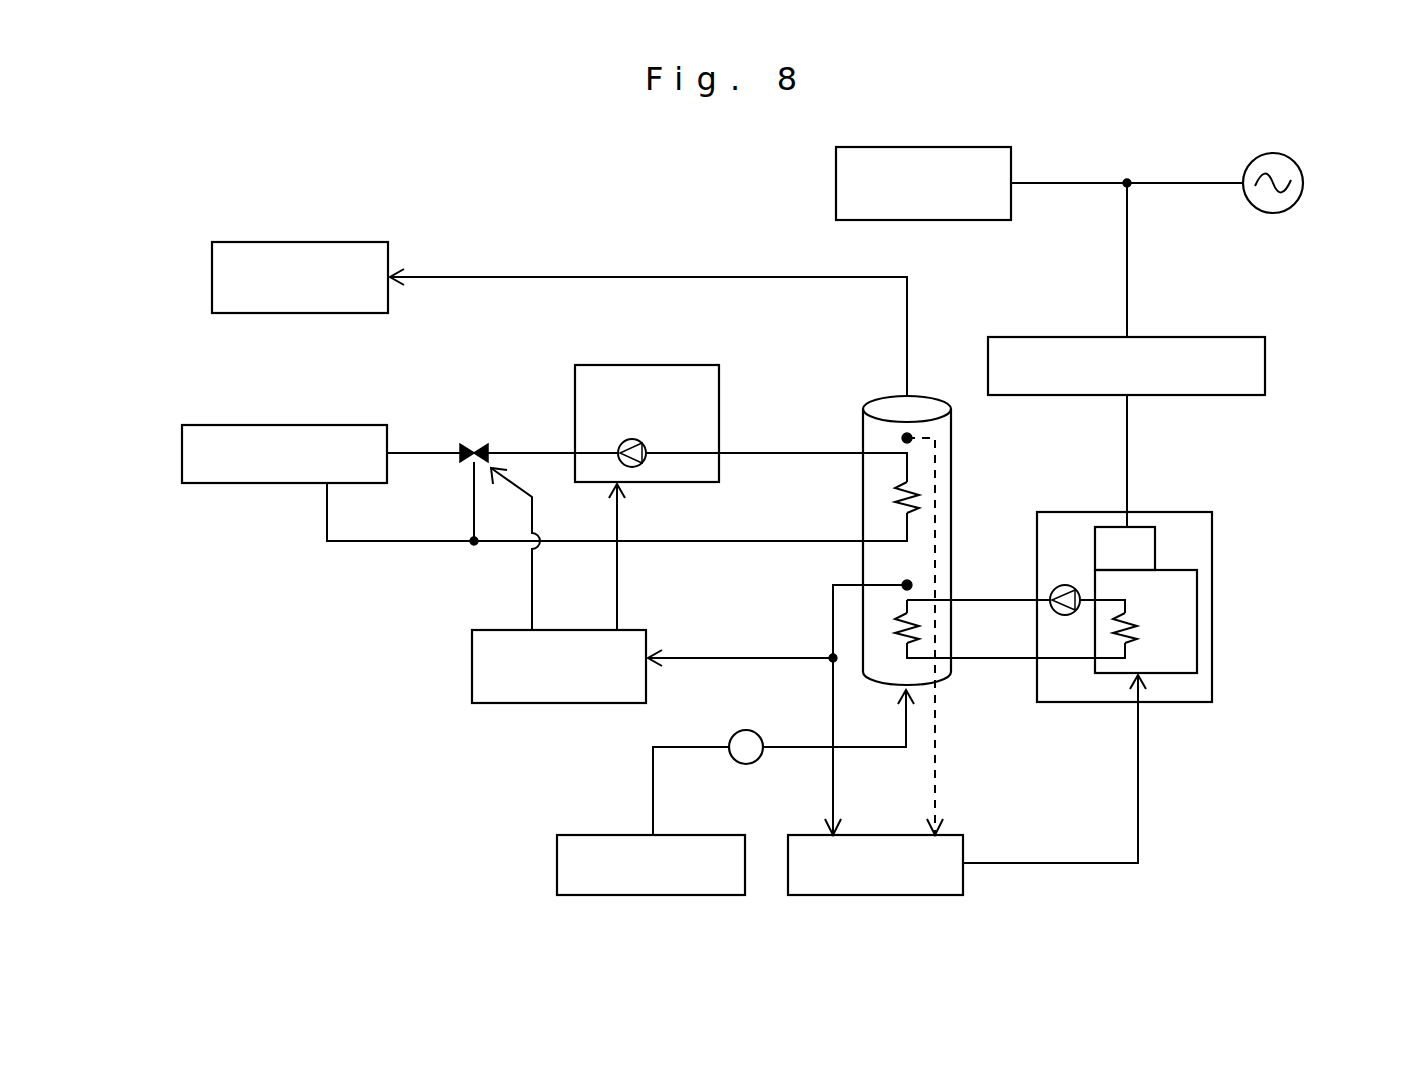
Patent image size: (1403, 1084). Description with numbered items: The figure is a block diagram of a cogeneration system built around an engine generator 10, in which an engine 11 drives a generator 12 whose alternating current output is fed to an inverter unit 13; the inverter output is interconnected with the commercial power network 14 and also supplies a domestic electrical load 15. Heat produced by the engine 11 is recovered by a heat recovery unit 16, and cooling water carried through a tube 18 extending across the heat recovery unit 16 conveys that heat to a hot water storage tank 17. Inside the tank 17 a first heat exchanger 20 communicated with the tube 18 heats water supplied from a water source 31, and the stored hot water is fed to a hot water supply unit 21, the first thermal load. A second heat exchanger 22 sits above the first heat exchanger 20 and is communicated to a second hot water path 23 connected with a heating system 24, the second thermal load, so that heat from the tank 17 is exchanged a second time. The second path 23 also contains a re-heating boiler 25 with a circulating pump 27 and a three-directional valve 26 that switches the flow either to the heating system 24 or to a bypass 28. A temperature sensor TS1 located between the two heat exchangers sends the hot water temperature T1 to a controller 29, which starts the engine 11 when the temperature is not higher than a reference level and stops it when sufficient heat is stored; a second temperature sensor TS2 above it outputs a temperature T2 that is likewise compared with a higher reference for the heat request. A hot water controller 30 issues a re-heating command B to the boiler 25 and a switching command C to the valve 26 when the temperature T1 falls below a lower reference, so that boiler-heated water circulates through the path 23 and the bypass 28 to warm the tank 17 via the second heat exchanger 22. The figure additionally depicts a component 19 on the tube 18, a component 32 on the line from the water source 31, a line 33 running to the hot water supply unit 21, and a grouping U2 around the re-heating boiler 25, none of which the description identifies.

The engine generator 10 is at (1212, 660).
The engine 11 is at (1197, 622).
The generator 12 is at (1145, 548).
The inverter unit 13 is at (1265, 368).
The commercial power network 14 is at (1284, 211).
The domestic electrical load 15 is at (996, 220).
The heat recovery unit 16 is at (1135, 640).
The hot water storage tank 17 is at (951, 432).
The tube 18 is at (1005, 599).
The circulation pump 19 is at (1062, 588).
The first heat exchanger 20 is at (897, 648).
The hot water supply unit 21 is at (248, 314).
The second heat exchanger 22 is at (901, 478).
The second hot water path 23 is at (778, 455).
The heating system 24 is at (226, 484).
The re-heating boiler 25 is at (663, 365).
The three-directional valve 26 is at (470, 444).
The pump 27 is at (645, 458).
The bypass 28 is at (472, 499).
The controller 29 is at (963, 850).
The hot water controller 30 is at (497, 704).
The water source 31 is at (675, 896).
The water meter / valve 32 is at (746, 765).
The hot water supply pipe 33 is at (716, 264).
The temperature sensor TS1 is at (907, 585).
The second temperature sensor TS2 is at (907, 438).
The temperature of the hot water T1 is at (832, 598).
The temperature outputted by the second temperature sensor T2 is at (937, 766).
The re-heating command B is at (619, 557).
The switching command C is at (530, 606).
The re-heating unit U2 is at (604, 333).